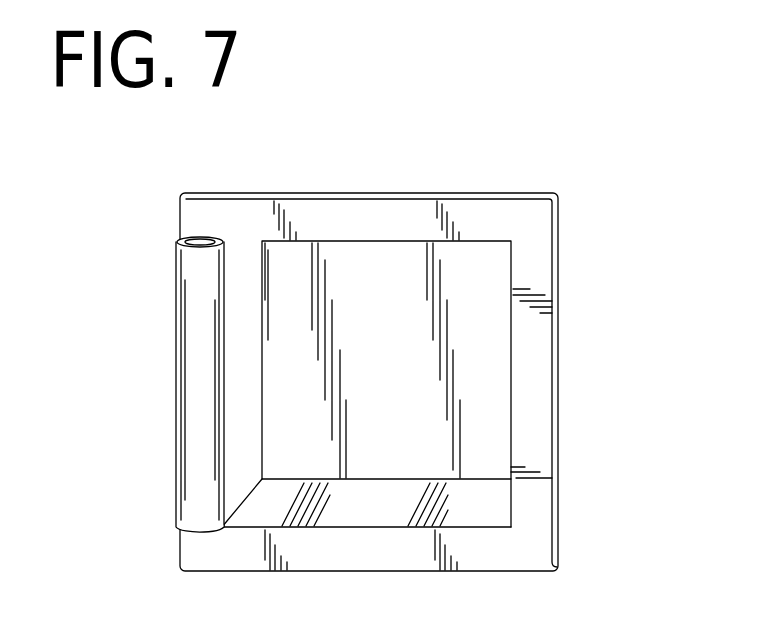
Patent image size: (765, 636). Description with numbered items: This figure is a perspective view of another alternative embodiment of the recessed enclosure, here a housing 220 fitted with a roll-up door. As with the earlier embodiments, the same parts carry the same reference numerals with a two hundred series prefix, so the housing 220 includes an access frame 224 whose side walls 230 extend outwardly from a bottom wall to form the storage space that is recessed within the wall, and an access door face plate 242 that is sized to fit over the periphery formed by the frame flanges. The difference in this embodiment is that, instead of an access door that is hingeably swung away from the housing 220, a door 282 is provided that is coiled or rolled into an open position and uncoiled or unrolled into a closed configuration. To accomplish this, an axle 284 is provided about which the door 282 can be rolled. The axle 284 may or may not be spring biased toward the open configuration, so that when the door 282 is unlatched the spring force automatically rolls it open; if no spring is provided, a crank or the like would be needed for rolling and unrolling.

The housing 220 is at (458, 158).
The access door face plate 242 is at (533, 217).
The access frame 224 is at (385, 450).
The side walls 230 is at (472, 510).
The door 282 is at (193, 370).
The axle 284 is at (208, 240).